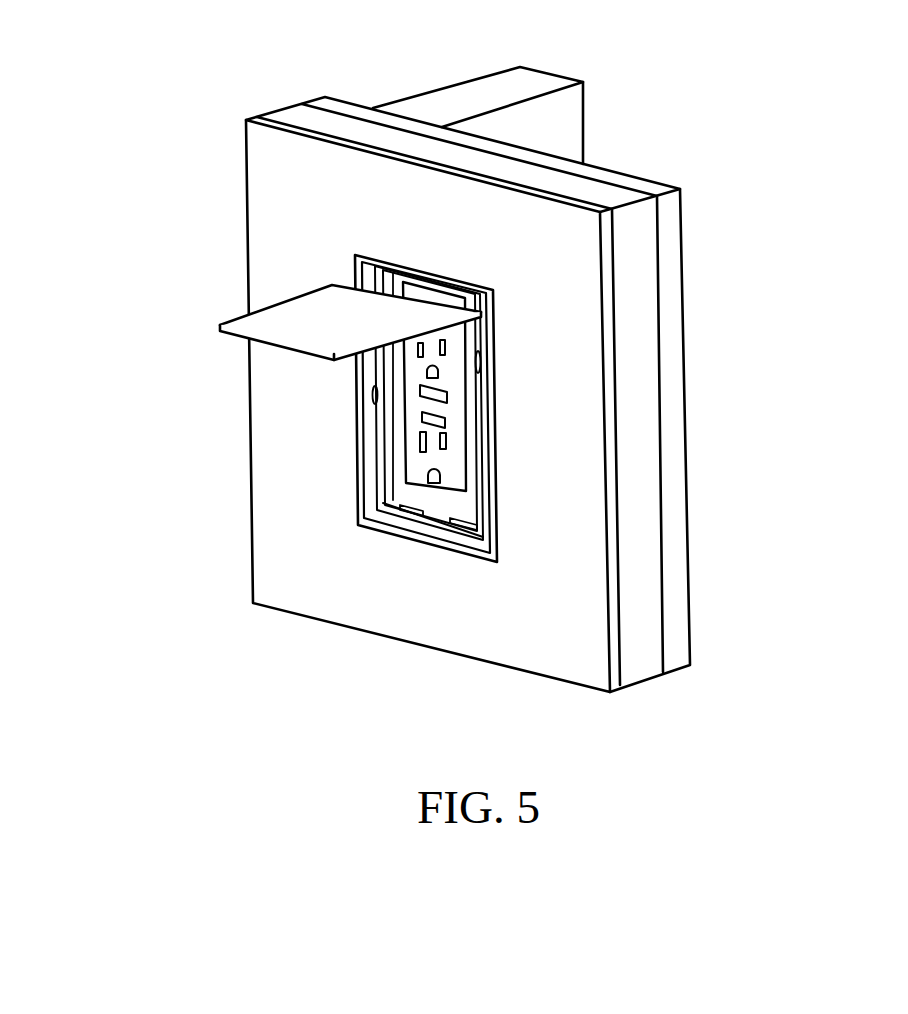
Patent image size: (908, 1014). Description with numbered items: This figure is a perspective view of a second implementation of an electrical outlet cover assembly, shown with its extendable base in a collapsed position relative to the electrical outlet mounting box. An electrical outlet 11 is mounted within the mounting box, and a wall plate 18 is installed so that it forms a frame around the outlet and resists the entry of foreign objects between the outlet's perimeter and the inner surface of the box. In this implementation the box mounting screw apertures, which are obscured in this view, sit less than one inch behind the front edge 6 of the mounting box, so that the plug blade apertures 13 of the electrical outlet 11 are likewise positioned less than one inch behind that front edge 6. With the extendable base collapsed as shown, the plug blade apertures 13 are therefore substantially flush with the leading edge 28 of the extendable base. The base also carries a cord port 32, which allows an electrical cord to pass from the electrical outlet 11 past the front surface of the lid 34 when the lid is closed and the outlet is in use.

The front edge 6 is at (458, 286).
The leading edge 28 is at (442, 293).
The plug blade apertures 13 is at (442, 444).
The electrical outlet 11 is at (452, 470).
The wall plate 18 is at (407, 490).
The cord port 32 is at (438, 519).
The lid 34 is at (343, 323).